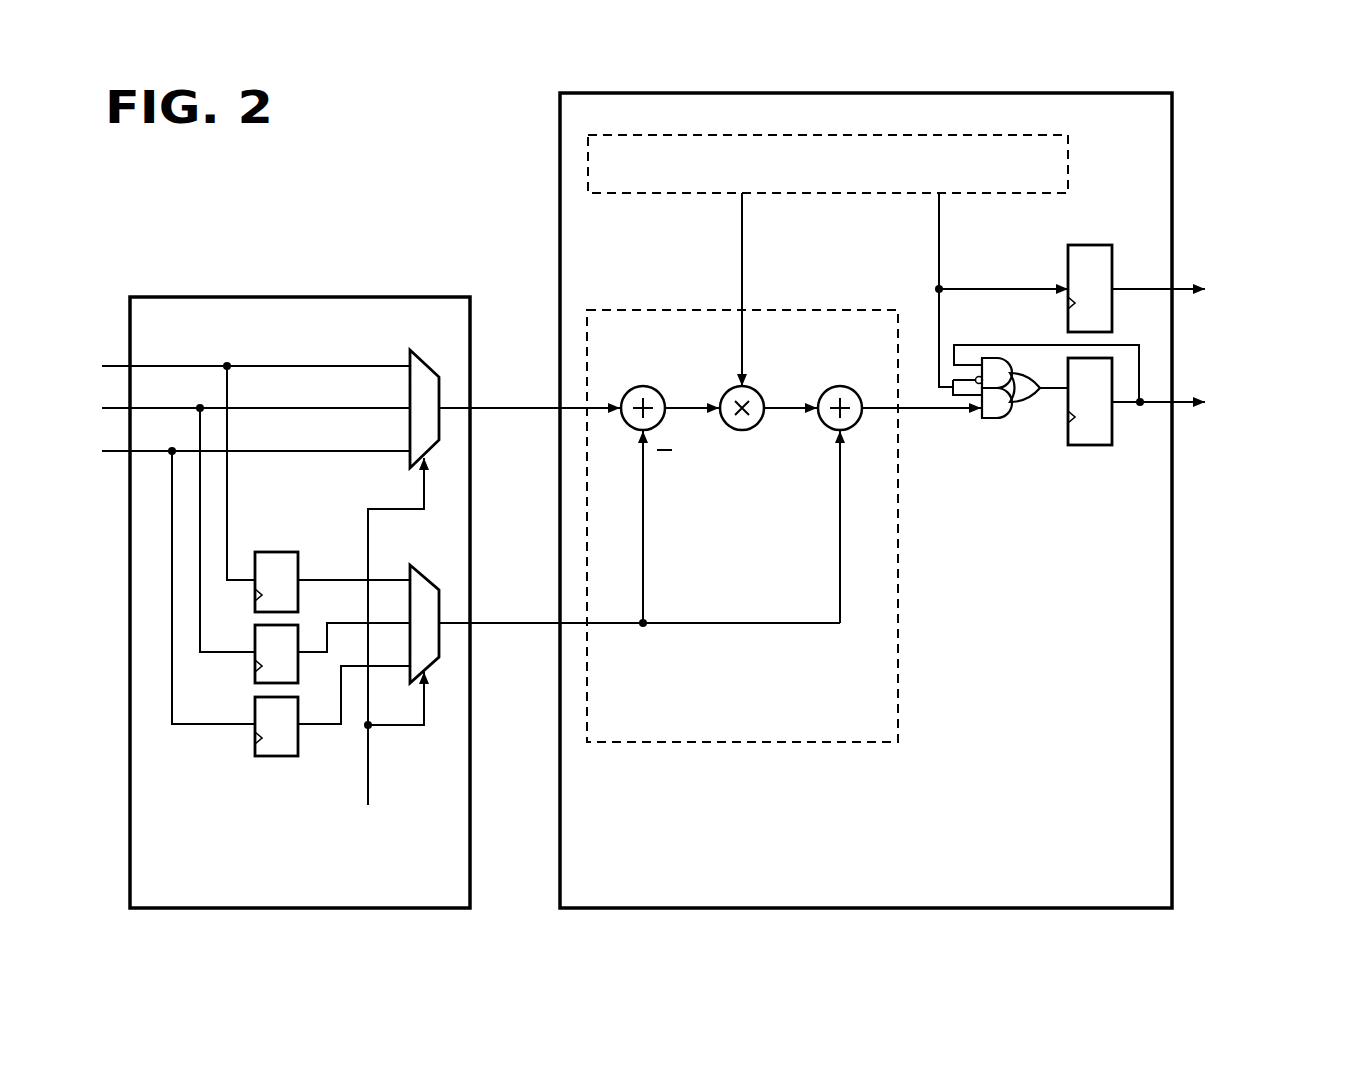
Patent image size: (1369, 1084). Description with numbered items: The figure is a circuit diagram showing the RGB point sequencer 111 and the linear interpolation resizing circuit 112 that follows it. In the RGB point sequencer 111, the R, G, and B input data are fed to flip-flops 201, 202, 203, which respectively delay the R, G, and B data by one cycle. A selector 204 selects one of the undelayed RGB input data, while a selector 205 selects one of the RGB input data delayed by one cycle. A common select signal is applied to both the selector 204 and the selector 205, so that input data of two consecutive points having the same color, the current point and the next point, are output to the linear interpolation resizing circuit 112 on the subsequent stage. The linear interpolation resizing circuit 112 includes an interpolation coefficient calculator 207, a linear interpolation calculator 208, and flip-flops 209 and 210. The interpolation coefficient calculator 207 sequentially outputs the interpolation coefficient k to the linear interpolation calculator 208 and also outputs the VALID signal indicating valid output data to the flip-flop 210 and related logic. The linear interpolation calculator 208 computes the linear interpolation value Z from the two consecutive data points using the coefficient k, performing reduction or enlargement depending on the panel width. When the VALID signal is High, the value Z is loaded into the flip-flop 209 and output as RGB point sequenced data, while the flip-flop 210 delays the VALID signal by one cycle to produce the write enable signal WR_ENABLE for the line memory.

The RGB point sequencer 111 is at (440, 297).
The linear interpolation resizing circuit 112 is at (560, 115).
The flip-flop 201 is at (280, 552).
The flip-flop 202 is at (255, 680).
The flip-flop 203 is at (265, 757).
The selector 204 is at (415, 350).
The selector 205 is at (416, 565).
The interpolation coefficient calculator 207 is at (1070, 140).
The linear interpolation calculator 208 is at (614, 308).
The flip-flop 209 is at (1100, 447).
The flip-flop 210 is at (1103, 245).